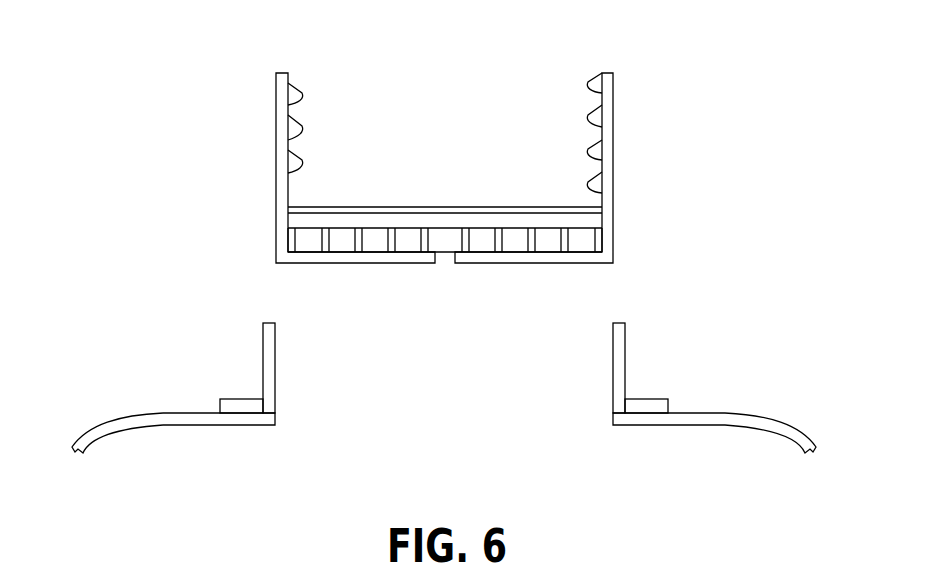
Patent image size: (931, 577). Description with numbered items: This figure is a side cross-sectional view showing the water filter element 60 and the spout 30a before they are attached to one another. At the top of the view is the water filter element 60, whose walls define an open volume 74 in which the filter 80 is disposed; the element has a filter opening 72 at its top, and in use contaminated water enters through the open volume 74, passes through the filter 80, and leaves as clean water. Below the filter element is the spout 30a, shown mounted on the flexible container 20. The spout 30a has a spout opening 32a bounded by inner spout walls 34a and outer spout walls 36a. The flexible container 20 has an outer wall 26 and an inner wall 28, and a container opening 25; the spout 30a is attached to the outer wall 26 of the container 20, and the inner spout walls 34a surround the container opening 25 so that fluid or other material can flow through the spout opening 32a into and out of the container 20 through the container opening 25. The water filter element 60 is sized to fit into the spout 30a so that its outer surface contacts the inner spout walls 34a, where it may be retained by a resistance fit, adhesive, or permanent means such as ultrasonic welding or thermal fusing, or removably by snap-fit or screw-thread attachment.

The water filter element 60 is at (186, 82).
The filter opening 72 is at (464, 63).
The open volume 74 is at (462, 162).
The filter 80 is at (487, 217).
The flexible container 20 is at (110, 427).
The container opening 25 is at (445, 435).
The spout opening 32a is at (445, 321).
The outer spout wall 36a is at (262, 355).
The spout 30a is at (620, 360).
The inner spout wall 34a is at (613, 383).
The inner container wall 28 is at (220, 427).
The outer container wall 26 is at (162, 412).